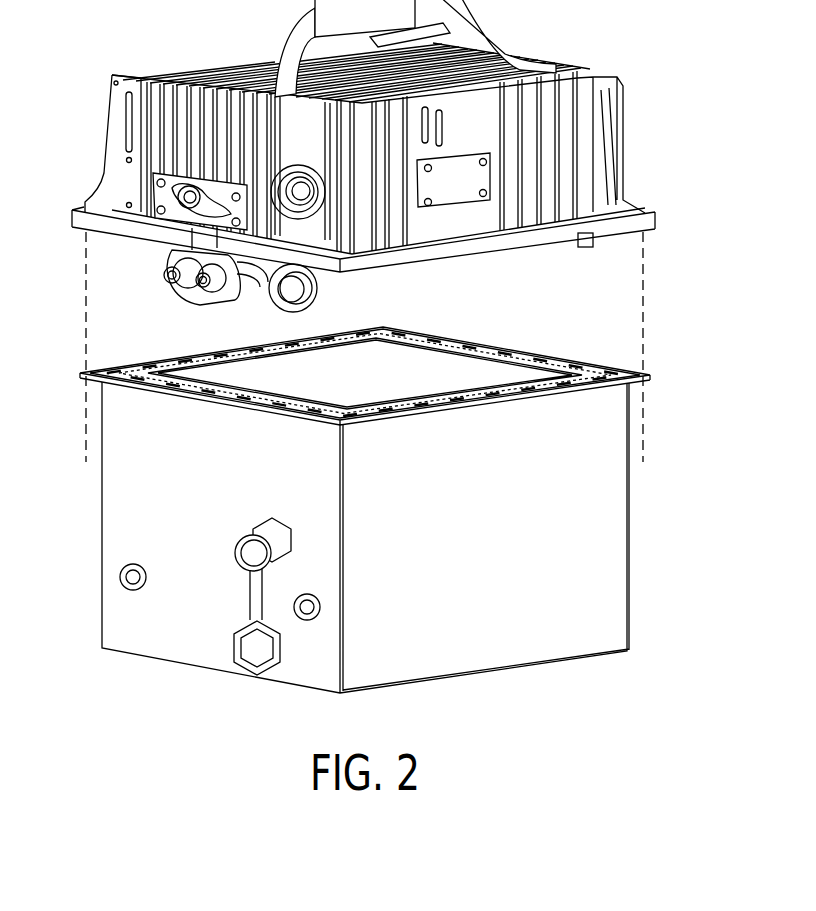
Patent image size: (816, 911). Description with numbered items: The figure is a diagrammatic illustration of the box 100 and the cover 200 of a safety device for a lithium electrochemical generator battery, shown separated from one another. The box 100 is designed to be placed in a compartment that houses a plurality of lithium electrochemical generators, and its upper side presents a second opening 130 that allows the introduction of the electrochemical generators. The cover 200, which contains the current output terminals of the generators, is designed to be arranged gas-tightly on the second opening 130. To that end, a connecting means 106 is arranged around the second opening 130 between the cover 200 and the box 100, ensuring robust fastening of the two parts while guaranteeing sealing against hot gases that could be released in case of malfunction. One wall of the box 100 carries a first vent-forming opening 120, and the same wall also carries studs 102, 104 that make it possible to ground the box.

The cover 200 is at (568, 140).
The box 100 is at (612, 543).
The connecting means 106 is at (630, 371).
The second opening 130 is at (430, 380).
The stud 104 is at (121, 582).
The first vent-forming opening 120 is at (247, 558).
The stud 102 is at (306, 620).